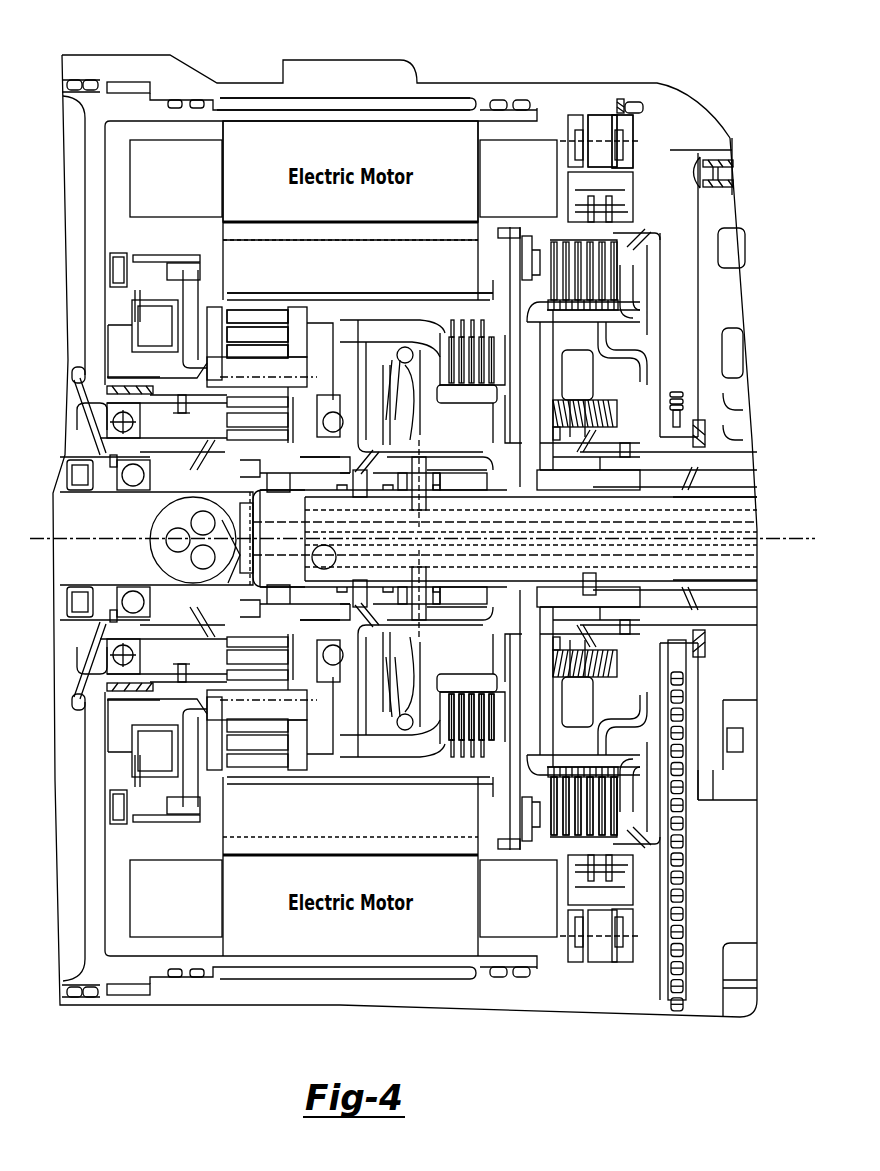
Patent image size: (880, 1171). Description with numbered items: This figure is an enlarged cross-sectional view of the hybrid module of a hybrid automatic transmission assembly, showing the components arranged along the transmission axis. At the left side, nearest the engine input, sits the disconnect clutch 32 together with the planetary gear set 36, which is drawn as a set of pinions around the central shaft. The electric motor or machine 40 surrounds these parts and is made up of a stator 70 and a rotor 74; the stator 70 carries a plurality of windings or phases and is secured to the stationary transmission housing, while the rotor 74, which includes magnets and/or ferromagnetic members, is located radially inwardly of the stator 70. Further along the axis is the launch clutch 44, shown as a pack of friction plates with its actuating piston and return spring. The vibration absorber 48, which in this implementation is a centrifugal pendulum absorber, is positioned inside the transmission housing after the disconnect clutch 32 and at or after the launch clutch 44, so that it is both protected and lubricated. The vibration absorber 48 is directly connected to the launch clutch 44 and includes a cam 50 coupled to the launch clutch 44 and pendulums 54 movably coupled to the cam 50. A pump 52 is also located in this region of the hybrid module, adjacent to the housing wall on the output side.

The disconnect clutch 32 is at (424, 770).
The planetary gear set 36 is at (205, 427).
The electric motor or machine 40 is at (258, 103).
The launch clutch 44 is at (537, 860).
The vibration absorber 48 is at (622, 100).
The cam 50 is at (600, 127).
The pump 52 is at (681, 376).
The pendulums 54 is at (630, 135).
The stator 70 is at (437, 140).
The rotor 74 is at (277, 267).